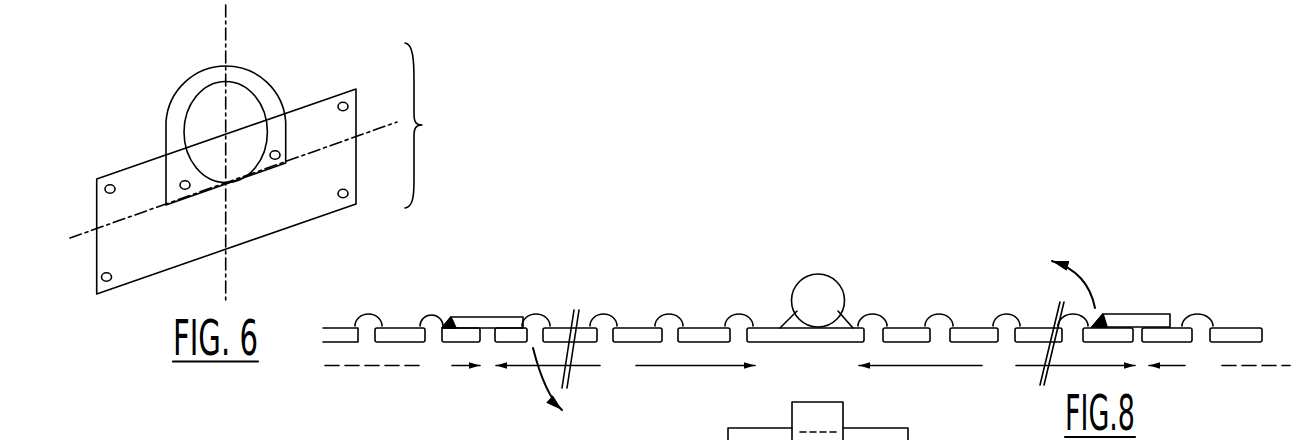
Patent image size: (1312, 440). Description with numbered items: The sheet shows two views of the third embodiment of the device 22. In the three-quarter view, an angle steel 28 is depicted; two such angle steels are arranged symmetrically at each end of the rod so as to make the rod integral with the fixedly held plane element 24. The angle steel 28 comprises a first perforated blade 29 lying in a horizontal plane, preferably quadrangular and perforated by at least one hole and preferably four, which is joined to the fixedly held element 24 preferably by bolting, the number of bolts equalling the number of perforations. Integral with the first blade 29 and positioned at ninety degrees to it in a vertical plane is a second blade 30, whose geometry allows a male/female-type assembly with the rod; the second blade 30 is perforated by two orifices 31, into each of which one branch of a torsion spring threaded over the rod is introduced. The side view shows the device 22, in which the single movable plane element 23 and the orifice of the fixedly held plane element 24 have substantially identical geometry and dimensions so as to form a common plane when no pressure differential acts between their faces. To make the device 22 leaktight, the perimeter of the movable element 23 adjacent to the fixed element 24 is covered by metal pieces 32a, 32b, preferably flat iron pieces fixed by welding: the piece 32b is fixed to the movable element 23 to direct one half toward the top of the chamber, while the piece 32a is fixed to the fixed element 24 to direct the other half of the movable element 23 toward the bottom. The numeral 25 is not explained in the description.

In FIG. 8, the device 22 is at (741, 350).
In FIG. 8, the movable plane element 23 is at (869, 393).
In FIG. 8, the fixedly held plane element 24 is at (807, 366).
In FIG. 8, the chain block 25 is at (818, 398).
In FIG. 6, the angle steel 28 is at (432, 125).
In FIG. 6, the first perforated blade 29 is at (393, 177).
In FIG. 6, the second blade 30 is at (279, 85).
In FIG. 6, the orifices 31 is at (186, 209).
In FIG. 8, the metal piece 32a is at (483, 322).
In FIG. 8, the metal piece 32b is at (1145, 303).